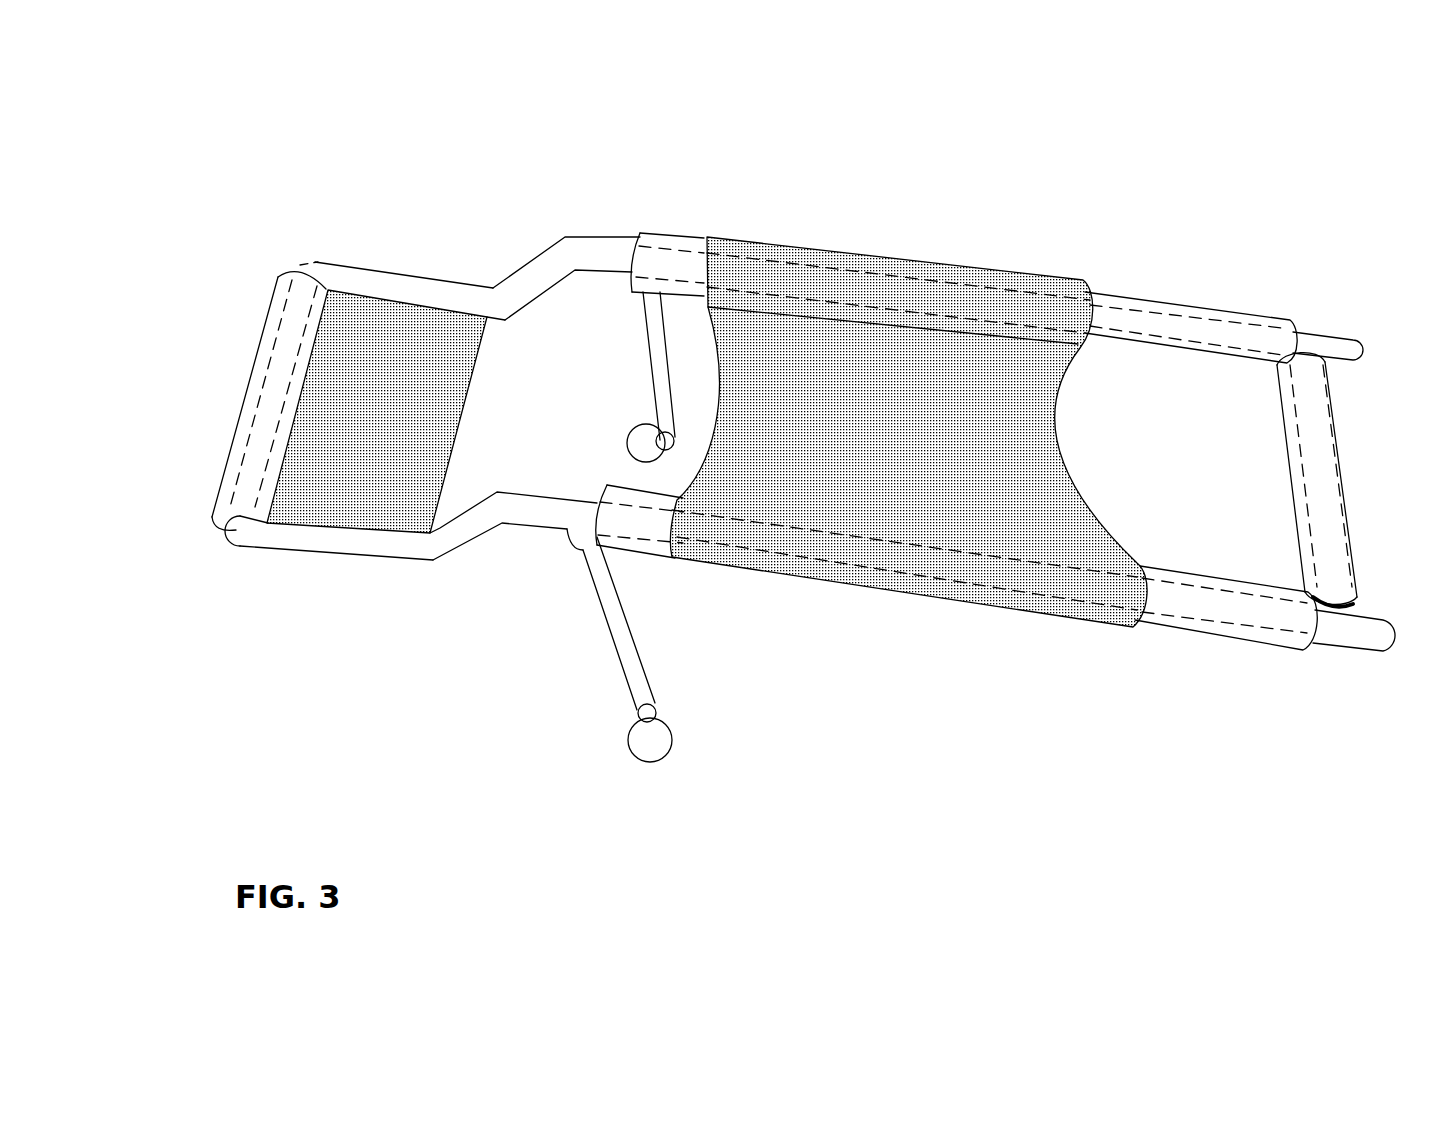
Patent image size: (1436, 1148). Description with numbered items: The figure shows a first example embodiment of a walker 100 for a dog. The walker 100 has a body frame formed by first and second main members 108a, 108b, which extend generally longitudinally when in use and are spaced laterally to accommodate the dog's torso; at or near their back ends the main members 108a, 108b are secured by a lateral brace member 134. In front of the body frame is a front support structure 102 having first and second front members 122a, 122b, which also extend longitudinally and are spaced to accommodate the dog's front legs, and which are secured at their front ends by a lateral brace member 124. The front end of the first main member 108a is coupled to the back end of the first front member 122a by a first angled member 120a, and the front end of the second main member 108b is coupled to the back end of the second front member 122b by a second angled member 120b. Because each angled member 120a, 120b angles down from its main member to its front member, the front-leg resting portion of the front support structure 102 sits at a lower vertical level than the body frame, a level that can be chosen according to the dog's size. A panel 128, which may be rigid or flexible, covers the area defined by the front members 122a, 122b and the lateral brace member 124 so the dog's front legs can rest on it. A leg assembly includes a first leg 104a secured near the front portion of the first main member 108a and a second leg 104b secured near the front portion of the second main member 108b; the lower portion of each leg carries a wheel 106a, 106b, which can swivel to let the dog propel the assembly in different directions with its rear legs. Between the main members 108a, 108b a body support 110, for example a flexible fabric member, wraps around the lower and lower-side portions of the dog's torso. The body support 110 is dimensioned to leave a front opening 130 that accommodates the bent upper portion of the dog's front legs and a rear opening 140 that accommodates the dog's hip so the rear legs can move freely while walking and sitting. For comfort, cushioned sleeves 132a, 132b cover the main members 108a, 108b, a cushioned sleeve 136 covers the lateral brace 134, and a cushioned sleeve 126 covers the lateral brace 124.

The walker 100 is at (605, 141).
The front support structure 102 is at (530, 618).
The first leg 104a is at (607, 625).
The second leg 104b is at (647, 353).
The wheel 106a is at (670, 737).
The wheel 106b is at (640, 450).
The first main member 108a is at (1195, 628).
The second main member 108b is at (1140, 313).
The body support 110 is at (917, 488).
The first angled member 120a is at (467, 530).
The second angled member 120b is at (528, 280).
The first front member 122a is at (347, 545).
The second front member 122b is at (395, 287).
The lateral brace member 124 is at (270, 375).
The cushioned sleeve 126 is at (232, 440).
The panel 128 is at (355, 333).
The opening 130 is at (587, 358).
The cushioned sleeve 132a is at (1243, 643).
The cushioned sleeve 132b is at (1223, 308).
The lateral brace member 134 is at (1340, 493).
The cushioned sleeve 136 is at (1343, 453).
The opening 140 is at (1163, 464).